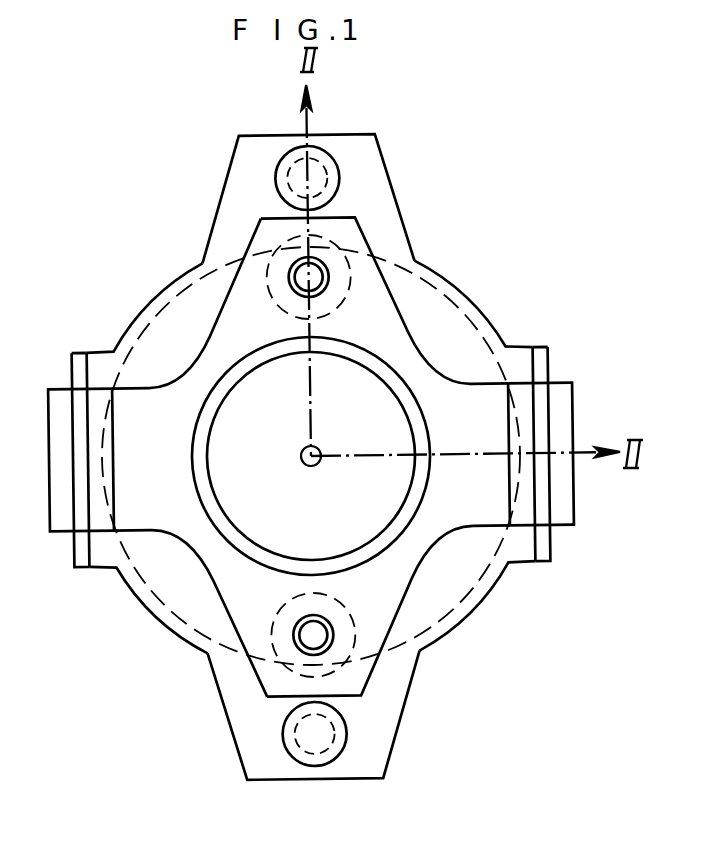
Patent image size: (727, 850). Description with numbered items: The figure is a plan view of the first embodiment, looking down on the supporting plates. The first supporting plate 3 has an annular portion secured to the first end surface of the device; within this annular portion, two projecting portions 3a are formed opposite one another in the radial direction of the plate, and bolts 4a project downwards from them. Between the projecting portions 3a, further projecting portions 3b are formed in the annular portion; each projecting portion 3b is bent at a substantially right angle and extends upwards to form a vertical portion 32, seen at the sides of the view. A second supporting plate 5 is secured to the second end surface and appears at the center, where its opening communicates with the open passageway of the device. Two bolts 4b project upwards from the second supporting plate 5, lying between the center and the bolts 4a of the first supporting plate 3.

The first supporting plate 3 is at (148, 308).
The projecting portions 3a is at (377, 181).
The projecting portions 3b is at (103, 555).
The vertical portion 32 is at (80, 358).
The bolts 4a is at (332, 160).
The bolts 4b is at (288, 266).
The second supporting plate 5 is at (407, 327).